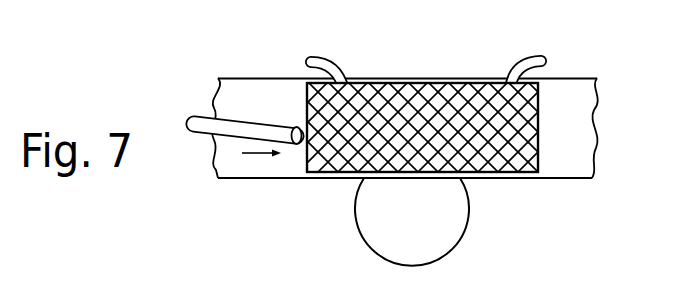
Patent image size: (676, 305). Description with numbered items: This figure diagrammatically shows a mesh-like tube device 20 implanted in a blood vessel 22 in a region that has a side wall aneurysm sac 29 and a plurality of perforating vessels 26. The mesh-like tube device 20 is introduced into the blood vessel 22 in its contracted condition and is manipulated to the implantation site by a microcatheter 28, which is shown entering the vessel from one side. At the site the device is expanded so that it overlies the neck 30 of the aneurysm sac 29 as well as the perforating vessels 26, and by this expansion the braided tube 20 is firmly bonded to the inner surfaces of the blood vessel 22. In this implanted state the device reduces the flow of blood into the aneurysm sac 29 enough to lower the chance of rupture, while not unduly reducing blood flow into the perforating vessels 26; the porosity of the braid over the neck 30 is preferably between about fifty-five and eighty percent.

The mesh-like tube device 20 is at (428, 145).
The blood vessel 22 is at (573, 174).
The perforating vessels 26 is at (345, 64).
The microcatheter 28 is at (252, 117).
The side wall aneurysm sac 29 is at (387, 229).
The neck of aneurysm sac 30 is at (435, 133).